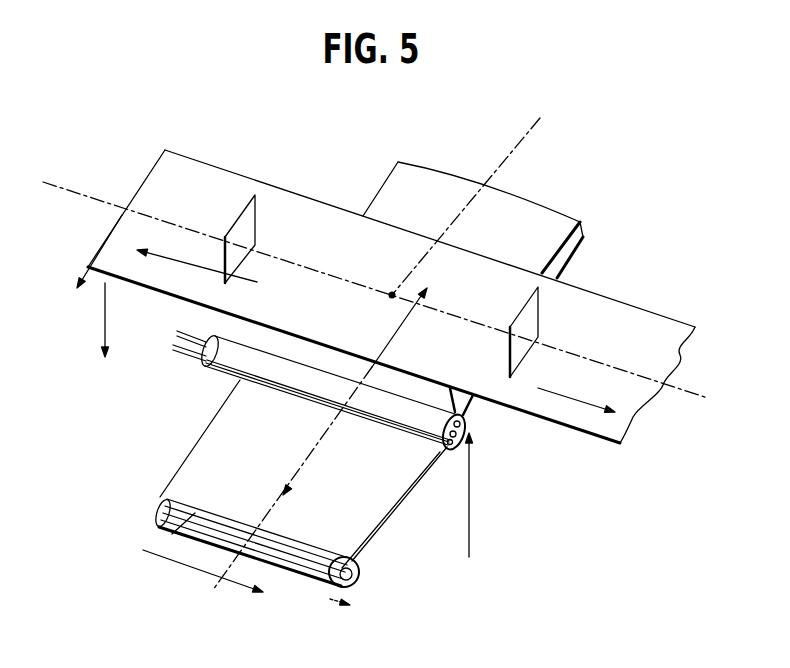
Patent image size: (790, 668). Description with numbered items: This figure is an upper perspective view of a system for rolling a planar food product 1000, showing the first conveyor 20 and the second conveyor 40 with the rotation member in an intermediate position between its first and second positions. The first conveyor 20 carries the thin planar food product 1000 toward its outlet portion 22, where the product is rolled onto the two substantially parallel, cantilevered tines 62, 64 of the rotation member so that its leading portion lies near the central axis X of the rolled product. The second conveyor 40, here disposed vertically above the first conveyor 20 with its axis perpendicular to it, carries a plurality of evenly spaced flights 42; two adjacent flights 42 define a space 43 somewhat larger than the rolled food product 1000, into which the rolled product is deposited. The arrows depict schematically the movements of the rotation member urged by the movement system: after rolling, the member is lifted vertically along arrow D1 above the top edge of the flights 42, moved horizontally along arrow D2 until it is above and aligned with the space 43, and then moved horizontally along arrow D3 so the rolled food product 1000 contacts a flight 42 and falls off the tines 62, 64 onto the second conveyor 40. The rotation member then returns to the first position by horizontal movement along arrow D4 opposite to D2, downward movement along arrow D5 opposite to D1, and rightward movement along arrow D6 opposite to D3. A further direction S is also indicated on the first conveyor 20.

The first conveyor 20 is at (305, 535).
The outlet portion 22 is at (165, 524).
The second conveyor 40 is at (392, 233).
The flights 42 is at (248, 226).
The space 43 is at (397, 290).
The tine 62 is at (188, 335).
The tine 64 is at (185, 350).
The planar food product 1000 is at (233, 360).
The arrow D1 is at (470, 495).
The arrow D2 is at (402, 332).
The arrow D3 is at (250, 282).
The arrow D4 is at (100, 249).
The arrow D5 is at (105, 313).
The arrow D6 is at (578, 408).
The direction S is at (298, 475).
The central axis X is at (330, 599).